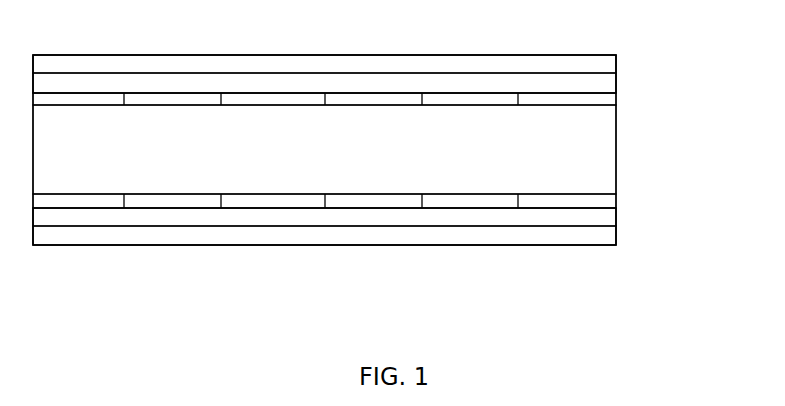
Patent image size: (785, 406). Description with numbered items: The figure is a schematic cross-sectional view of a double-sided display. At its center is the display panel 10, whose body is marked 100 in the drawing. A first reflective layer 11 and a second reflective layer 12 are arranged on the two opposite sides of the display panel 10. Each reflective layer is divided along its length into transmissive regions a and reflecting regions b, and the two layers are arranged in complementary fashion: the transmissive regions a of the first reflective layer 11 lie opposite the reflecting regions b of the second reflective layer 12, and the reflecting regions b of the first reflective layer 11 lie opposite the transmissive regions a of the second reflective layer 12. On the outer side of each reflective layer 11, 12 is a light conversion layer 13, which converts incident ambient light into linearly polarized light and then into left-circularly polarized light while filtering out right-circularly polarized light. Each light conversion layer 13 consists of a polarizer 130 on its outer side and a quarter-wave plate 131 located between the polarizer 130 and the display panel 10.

The display panel 10 is at (619, 153).
The light guide plate body 100 is at (324, 149).
The first reflective layer 11 is at (619, 99).
The second reflective layer 12 is at (619, 201).
The light conversion layer 13 is at (705, 25).
The polarizer 130 is at (619, 60).
The quarter-wave plate 131 is at (619, 80).